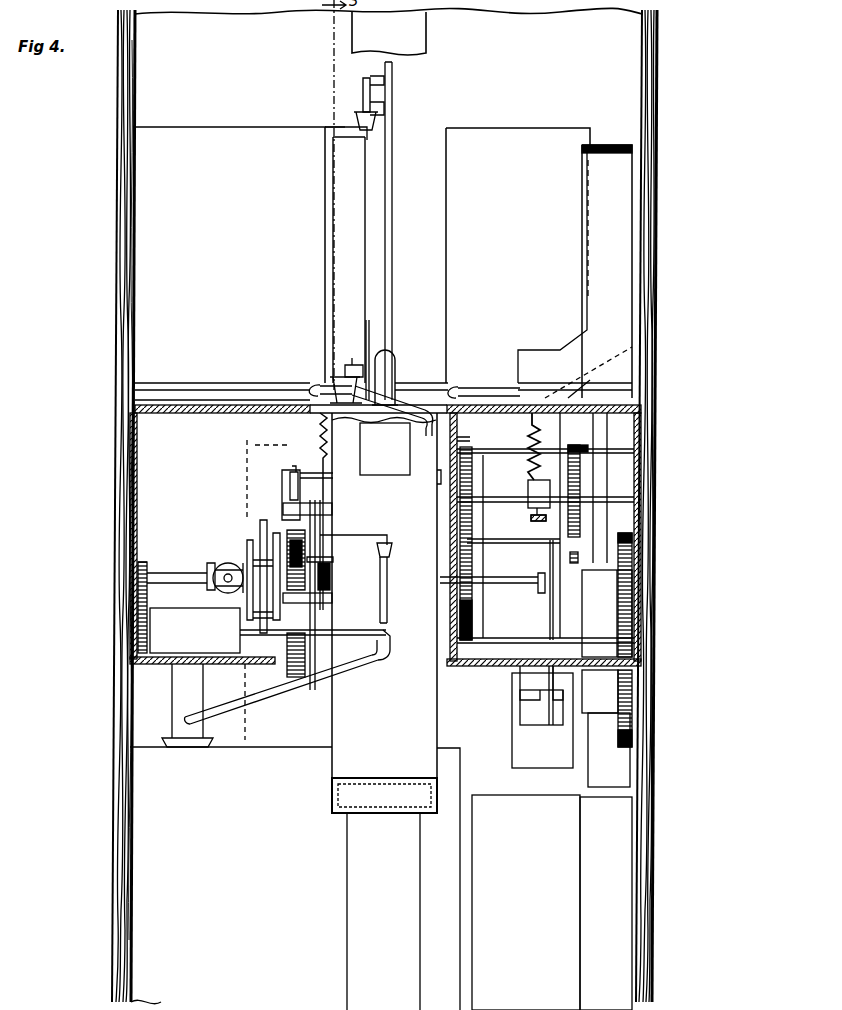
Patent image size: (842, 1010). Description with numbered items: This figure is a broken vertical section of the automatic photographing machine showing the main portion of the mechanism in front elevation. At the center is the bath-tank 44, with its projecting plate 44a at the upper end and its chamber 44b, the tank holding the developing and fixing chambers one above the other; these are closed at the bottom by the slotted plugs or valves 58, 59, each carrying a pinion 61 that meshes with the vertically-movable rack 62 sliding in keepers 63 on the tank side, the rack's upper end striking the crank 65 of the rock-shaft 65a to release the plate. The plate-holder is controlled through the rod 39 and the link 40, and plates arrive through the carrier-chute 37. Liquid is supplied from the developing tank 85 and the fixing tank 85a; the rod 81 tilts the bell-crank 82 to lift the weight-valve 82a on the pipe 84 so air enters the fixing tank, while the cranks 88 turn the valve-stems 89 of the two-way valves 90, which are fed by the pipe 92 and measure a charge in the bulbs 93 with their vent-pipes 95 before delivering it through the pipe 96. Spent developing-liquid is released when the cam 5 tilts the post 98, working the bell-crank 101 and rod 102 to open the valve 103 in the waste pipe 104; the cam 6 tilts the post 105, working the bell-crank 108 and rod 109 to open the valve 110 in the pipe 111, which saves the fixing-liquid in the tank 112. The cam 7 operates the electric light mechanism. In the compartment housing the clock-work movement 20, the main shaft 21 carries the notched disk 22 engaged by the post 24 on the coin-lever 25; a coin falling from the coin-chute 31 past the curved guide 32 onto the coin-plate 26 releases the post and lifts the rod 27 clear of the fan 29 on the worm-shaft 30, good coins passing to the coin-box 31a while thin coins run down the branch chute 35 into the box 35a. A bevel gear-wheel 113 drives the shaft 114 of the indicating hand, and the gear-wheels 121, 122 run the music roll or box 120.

The cam 5 is at (250, 540).
The cam 6 is at (222, 568).
The cam 7 is at (331, 578).
The clock-work movement 20 is at (545, 528).
The main shaft 21 is at (500, 586).
The disk 22 is at (548, 603).
The post 24 is at (520, 676).
The lever 25 is at (550, 707).
The coin-plate 26 is at (530, 720).
The rod 27 is at (549, 598).
The fan 29 is at (528, 492).
The worm-shaft 30 is at (528, 466).
The coin-chute 31 is at (561, 389).
The coin-box 31a is at (526, 902).
The curved guide 32 is at (512, 738).
The branch chute 35 is at (588, 376).
The box 35a is at (606, 903).
The carrier-chute 37 is at (607, 271).
The rod 39 is at (318, 525).
The link 40 is at (648, 696).
The bath-tank 44 is at (396, 711).
The projecting plate 44a is at (431, 437).
The chamber 44b is at (385, 449).
The plug or valve 58 is at (330, 560).
The plug or valve 59 is at (310, 644).
The pinion 61 is at (325, 540).
The rack 62 is at (285, 510).
The keepers 63 is at (330, 505).
The crank 65 is at (288, 476).
The shaft 65a is at (310, 472).
The rod 81 is at (346, 255).
The bell-crank 82 is at (362, 84).
The weight-valve 82a is at (363, 116).
The pipe 84 is at (338, 127).
The tank 85 is at (518, 255).
The tank 85a is at (230, 255).
The cranks 88 is at (370, 352).
The valve-stems 89 is at (352, 362).
The valves 90 is at (340, 375).
The pipe 92 is at (316, 384).
The bulbs 93 is at (390, 360).
The vent-pipes 95 is at (392, 255).
The pipe 96 is at (425, 473).
The post 98 is at (268, 520).
The bell-crank 101 is at (262, 540).
The rod 102 is at (360, 528).
The valve 103 is at (391, 553).
The pipe 104 is at (389, 585).
The post 105 is at (195, 582).
The bell-crank 108 is at (272, 662).
The rod 109 is at (346, 630).
The valve 110 is at (389, 643).
The pipe 111 is at (360, 664).
The tank 112 is at (231, 771).
The bevel gear-wheel 113 is at (207, 572).
The shaft 114 is at (230, 572).
The music roll or box 120 is at (195, 623).
The gear-wheel 121 is at (153, 590).
The gear-wheel 122 is at (148, 565).